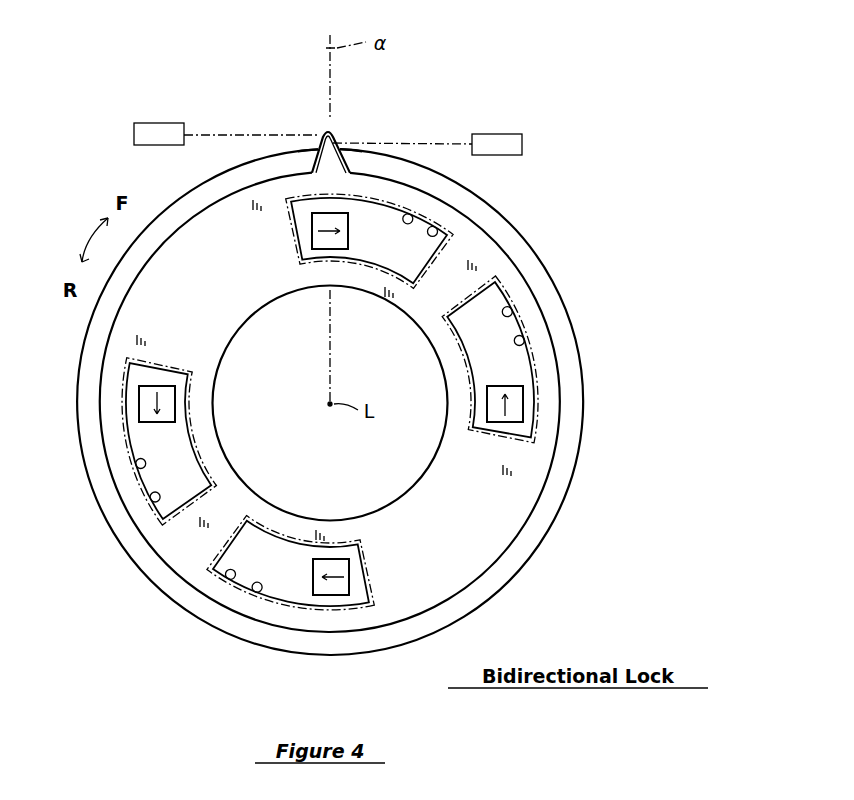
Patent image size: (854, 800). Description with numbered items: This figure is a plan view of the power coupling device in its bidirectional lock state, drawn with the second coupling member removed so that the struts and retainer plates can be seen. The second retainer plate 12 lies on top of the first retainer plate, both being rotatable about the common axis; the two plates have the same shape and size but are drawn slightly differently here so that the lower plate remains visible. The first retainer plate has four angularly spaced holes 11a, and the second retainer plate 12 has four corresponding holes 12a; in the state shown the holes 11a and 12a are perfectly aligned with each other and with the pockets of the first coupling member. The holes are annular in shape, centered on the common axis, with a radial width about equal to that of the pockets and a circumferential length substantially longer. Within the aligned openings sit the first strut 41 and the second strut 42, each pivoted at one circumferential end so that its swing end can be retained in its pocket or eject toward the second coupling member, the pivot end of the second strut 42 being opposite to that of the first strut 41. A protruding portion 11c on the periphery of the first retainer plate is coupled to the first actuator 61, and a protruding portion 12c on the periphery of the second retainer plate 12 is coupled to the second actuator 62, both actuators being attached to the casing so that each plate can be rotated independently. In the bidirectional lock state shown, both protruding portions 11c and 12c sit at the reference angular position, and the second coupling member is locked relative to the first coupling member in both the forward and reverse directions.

The second retainer plate 12 is at (476, 548).
The protruding portion 11c is at (322, 145).
The protruding portion 12c is at (333, 163).
The first actuator 61 is at (153, 124).
The second actuator 62 is at (497, 135).
The holes 12a is at (410, 226).
The holes 11a is at (436, 241).
The first strut 41 is at (146, 402).
The second strut 42 is at (320, 238).